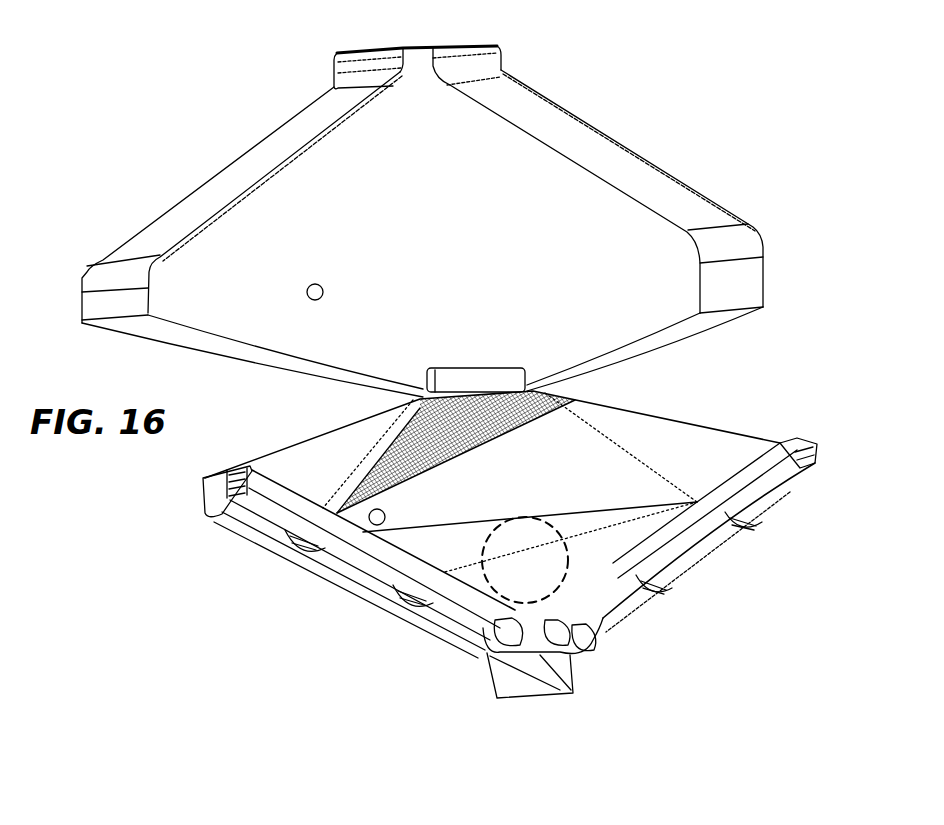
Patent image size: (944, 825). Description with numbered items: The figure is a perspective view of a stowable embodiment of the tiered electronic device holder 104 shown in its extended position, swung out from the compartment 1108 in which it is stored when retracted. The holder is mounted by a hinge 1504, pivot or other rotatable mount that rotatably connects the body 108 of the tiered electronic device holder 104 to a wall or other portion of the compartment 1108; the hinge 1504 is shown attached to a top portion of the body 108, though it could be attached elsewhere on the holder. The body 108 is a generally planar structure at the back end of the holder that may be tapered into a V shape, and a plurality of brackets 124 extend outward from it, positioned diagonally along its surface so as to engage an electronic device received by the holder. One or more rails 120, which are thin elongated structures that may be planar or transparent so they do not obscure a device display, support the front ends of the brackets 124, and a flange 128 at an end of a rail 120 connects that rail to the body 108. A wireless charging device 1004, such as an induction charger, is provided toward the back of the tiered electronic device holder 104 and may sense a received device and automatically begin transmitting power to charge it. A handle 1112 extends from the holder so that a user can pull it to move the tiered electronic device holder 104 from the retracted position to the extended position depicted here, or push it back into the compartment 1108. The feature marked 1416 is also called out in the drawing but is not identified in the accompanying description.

The tiered electronic device holder 104 is at (508, 565).
The body 108 is at (553, 462).
The rail 120 is at (273, 488).
The bracket 124 is at (305, 553).
The flange 128 is at (220, 505).
The wireless charging device 1004 is at (525, 517).
The compartment 1108 is at (237, 158).
The handle 1112 is at (547, 697).
The alignment hole 1416 is at (318, 284).
The hinge 1504 is at (468, 366).